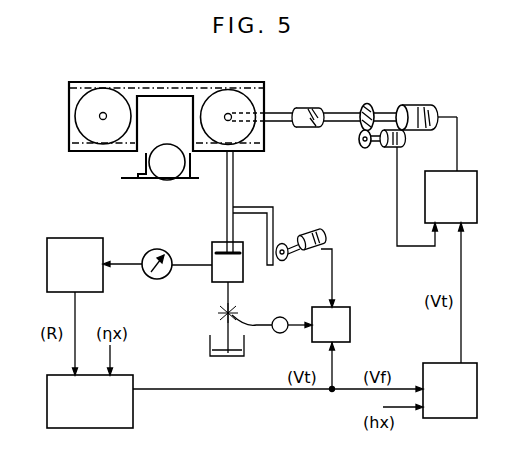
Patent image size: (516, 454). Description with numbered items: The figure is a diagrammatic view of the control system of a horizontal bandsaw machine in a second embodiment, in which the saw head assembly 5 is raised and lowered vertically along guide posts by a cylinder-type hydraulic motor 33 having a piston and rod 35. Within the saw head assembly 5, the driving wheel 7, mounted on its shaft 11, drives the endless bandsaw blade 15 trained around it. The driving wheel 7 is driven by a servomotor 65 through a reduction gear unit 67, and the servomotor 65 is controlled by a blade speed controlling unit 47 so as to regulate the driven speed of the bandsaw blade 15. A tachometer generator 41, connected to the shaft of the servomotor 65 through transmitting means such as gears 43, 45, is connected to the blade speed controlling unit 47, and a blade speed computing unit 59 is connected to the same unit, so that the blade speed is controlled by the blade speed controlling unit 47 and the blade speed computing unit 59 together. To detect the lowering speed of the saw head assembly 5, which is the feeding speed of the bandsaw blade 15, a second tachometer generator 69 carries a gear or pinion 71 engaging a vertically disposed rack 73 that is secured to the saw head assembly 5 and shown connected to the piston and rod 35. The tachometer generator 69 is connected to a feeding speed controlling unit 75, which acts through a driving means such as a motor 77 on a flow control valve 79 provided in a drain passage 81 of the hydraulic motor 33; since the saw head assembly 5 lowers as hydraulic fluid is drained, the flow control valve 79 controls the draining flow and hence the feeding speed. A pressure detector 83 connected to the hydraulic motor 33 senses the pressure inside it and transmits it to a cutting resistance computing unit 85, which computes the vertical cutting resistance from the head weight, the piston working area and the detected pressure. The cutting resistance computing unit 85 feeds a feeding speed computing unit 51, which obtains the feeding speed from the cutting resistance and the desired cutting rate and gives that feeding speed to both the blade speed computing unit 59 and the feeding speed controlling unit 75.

The saw head assembly 5 is at (180, 81).
The bandsaw blade 15 is at (145, 86).
The driving wheel 7 is at (250, 129).
The shaft 11 is at (230, 113).
The piston and rod 35 is at (234, 184).
The rack 73 is at (267, 232).
The gear or pinion 71 is at (283, 243).
The tachometer generator 69 is at (318, 232).
The drain passage 81 is at (225, 292).
The hydraulic motor 33 is at (243, 273).
The flow control valve 79 is at (225, 313).
The motor 77 is at (286, 318).
The feeding speed controlling unit 75 is at (331, 349).
The pressure detector 83 is at (156, 249).
The cutting resistance computing unit 85 is at (75, 306).
The feeding speed computing unit 51 is at (235, 401).
The blade speed computing unit 59 is at (450, 323).
The blade speed controlling unit 47 is at (451, 174).
The reduction gear unit 67 is at (308, 107).
The gear 43 is at (367, 103).
The gear 45 is at (359, 141).
The tachometer generator 41 is at (394, 149).
The servomotor 65 is at (420, 104).